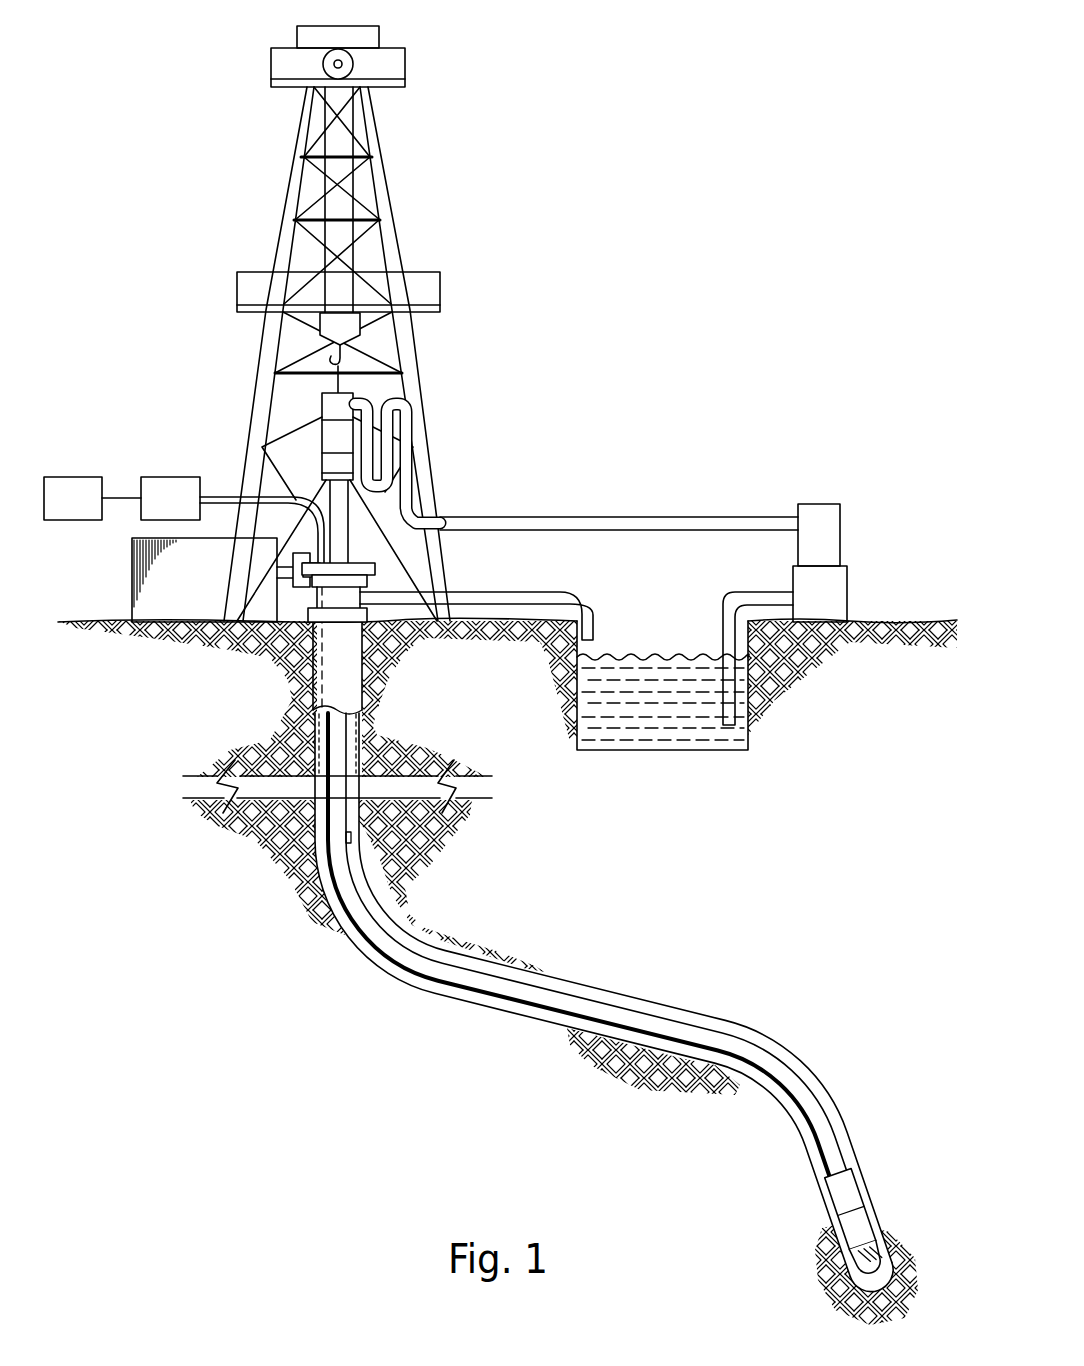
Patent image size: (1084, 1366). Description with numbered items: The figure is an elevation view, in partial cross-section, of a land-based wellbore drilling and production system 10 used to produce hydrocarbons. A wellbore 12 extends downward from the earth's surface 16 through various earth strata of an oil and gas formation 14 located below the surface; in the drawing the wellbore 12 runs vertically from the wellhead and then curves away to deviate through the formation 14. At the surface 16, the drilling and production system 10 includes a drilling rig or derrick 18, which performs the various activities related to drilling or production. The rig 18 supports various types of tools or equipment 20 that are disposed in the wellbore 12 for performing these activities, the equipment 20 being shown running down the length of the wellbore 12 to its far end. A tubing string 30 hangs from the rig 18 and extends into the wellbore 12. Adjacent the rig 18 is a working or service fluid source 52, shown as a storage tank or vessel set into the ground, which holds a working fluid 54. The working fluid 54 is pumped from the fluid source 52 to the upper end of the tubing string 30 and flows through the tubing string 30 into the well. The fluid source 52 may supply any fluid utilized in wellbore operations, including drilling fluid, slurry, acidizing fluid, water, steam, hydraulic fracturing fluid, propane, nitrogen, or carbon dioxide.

The wellbore drilling and production system 10 is at (156, 73).
The wellbore 12 is at (401, 984).
The oil and gas formation 14 is at (529, 880).
The earth's surface 16 is at (893, 621).
The drilling rig or derrick 18 is at (388, 188).
The tools or equipment 20 is at (583, 1003).
The tubing string 30 is at (337, 742).
The working or service fluid source 52 is at (660, 752).
The working fluid 54 is at (652, 668).